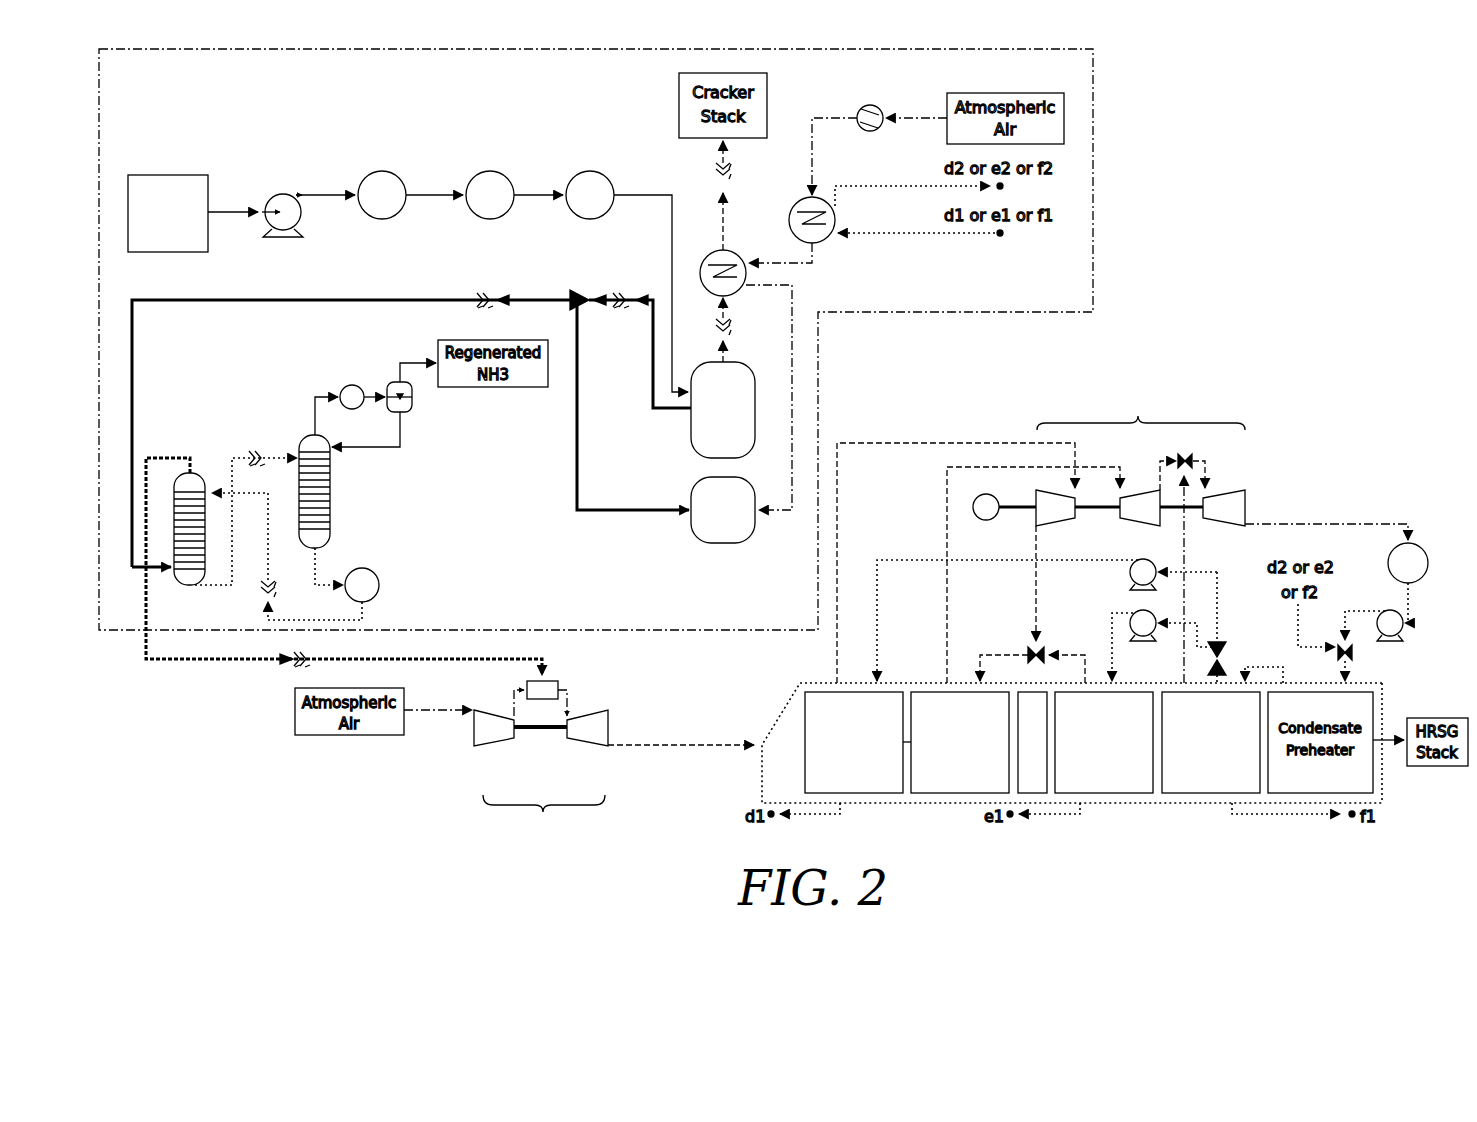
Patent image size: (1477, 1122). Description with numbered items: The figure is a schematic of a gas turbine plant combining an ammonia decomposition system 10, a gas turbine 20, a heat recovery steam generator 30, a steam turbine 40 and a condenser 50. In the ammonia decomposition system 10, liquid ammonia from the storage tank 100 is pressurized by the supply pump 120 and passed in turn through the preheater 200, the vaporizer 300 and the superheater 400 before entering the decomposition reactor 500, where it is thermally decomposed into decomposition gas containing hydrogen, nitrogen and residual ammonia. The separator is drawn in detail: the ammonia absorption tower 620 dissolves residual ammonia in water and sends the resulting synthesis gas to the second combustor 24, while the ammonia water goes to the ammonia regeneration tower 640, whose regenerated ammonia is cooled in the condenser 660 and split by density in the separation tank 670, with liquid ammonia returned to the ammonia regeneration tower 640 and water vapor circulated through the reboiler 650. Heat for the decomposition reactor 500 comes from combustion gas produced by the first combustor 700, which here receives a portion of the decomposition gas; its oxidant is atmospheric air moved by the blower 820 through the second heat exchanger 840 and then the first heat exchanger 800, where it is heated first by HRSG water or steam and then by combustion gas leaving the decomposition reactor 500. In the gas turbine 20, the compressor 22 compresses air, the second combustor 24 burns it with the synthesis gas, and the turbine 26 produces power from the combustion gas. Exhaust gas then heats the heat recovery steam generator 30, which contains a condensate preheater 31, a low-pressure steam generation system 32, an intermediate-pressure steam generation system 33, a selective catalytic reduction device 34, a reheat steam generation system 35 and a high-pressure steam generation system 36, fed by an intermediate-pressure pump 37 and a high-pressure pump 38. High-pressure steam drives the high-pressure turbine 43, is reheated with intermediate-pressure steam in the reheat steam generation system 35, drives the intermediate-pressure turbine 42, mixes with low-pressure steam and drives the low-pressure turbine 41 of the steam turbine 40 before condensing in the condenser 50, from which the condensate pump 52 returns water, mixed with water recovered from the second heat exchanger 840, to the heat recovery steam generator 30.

The ammonia decomposition system 10 is at (1133, 123).
The storage tank 100 is at (168, 175).
The supply pump 120 is at (286, 196).
The preheater 200 is at (385, 171).
The vaporizer 300 is at (490, 171).
The superheater 400 is at (591, 171).
The decomposition reactor 500 is at (691, 432).
The ammonia absorption tower 620 is at (196, 473).
The ammonia regeneration tower 640 is at (330, 488).
The reboiler 650 is at (379, 585).
The condenser 660 is at (352, 385).
The separation tank 670 is at (412, 397).
The first combustor 700 is at (691, 522).
The first heat exchanger 800 is at (706, 254).
The blower 820 is at (866, 105).
The second heat exchanger 840 is at (822, 243).
The gas turbine 20 is at (544, 815).
The compressor 22 is at (493, 729).
The second combustor 24 is at (541, 700).
The turbine 26 is at (578, 730).
The heat recovery steam generator 30 is at (1404, 710).
The condensate preheater 31 is at (1382, 780).
The low-pressure steam generation system 32 is at (1188, 793).
The intermediate-pressure steam generation system 33 is at (1105, 793).
The selective catalytic reduction device 34 is at (1040, 692).
The reheat steam generation system 35 is at (953, 793).
The high-pressure steam generation system 36 is at (868, 793).
The intermediate-pressure pump 37 is at (1143, 641).
The high-pressure pump 38 is at (1130, 570).
The steam turbine 40 is at (1109, 457).
The low-pressure turbine 41 is at (1226, 515).
The intermediate-pressure turbine 42 is at (1147, 514).
The high-pressure turbine 43 is at (1048, 515).
The condenser 50 is at (1428, 565).
The condensate pump 52 is at (1388, 641).